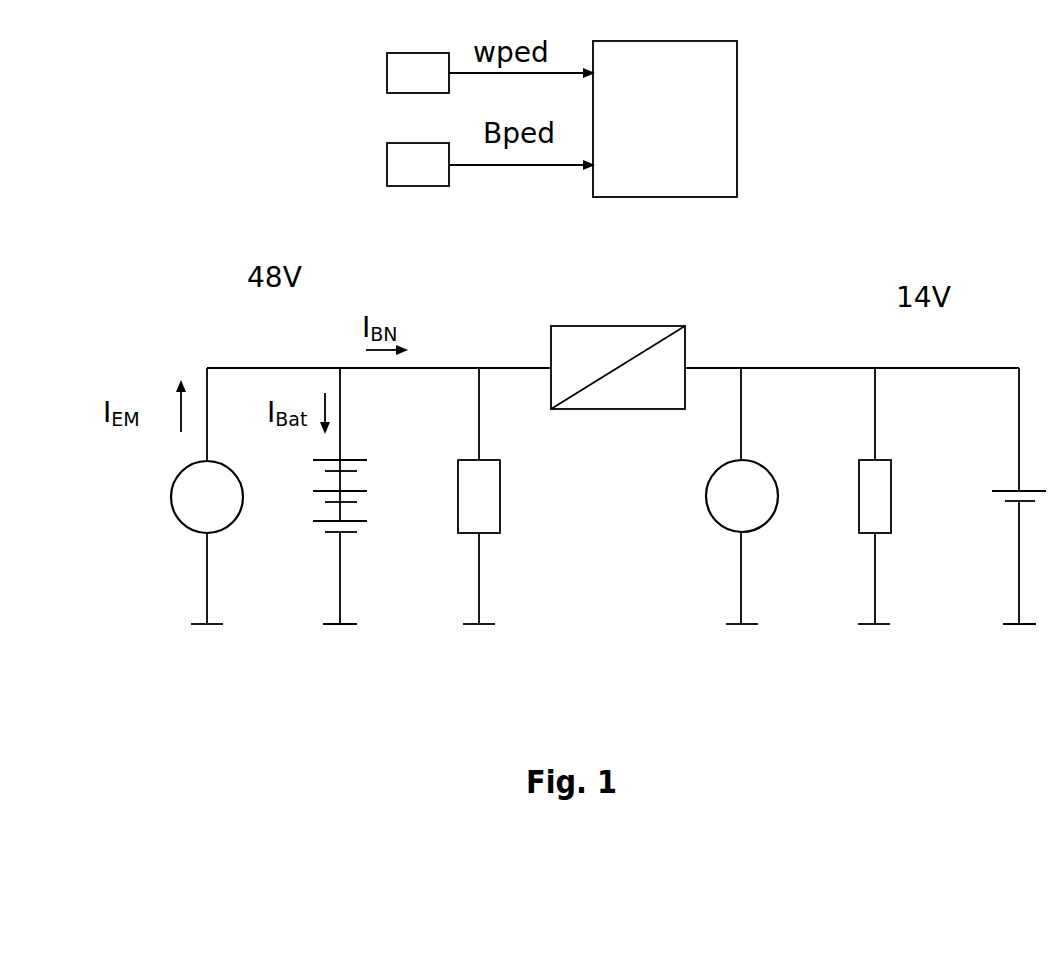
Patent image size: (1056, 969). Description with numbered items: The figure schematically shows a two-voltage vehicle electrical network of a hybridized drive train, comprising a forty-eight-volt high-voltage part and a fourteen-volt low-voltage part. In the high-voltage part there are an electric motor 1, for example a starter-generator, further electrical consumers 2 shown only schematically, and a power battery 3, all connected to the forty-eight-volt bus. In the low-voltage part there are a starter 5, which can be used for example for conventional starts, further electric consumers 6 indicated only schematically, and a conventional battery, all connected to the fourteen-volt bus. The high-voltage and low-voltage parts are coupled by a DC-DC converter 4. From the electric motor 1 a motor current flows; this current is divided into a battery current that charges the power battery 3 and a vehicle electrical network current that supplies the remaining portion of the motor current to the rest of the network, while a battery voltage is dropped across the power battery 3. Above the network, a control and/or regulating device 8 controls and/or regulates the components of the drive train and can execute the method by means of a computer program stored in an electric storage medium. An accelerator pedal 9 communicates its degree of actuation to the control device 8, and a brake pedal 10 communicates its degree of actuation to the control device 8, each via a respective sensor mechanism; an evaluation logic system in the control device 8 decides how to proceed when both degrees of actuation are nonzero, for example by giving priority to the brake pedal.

The electric motor 1 is at (207, 496).
The further electrical consumers 2 is at (479, 496).
The power battery 3 is at (321, 496).
The DC-DC converter 4 is at (618, 367).
The starter 5 is at (742, 496).
The further electric consumers 6 is at (874, 496).
The control and/or regulating device 8 is at (665, 119).
The accelerator pedal 9 is at (418, 73).
The brake pedal 10 is at (418, 164).